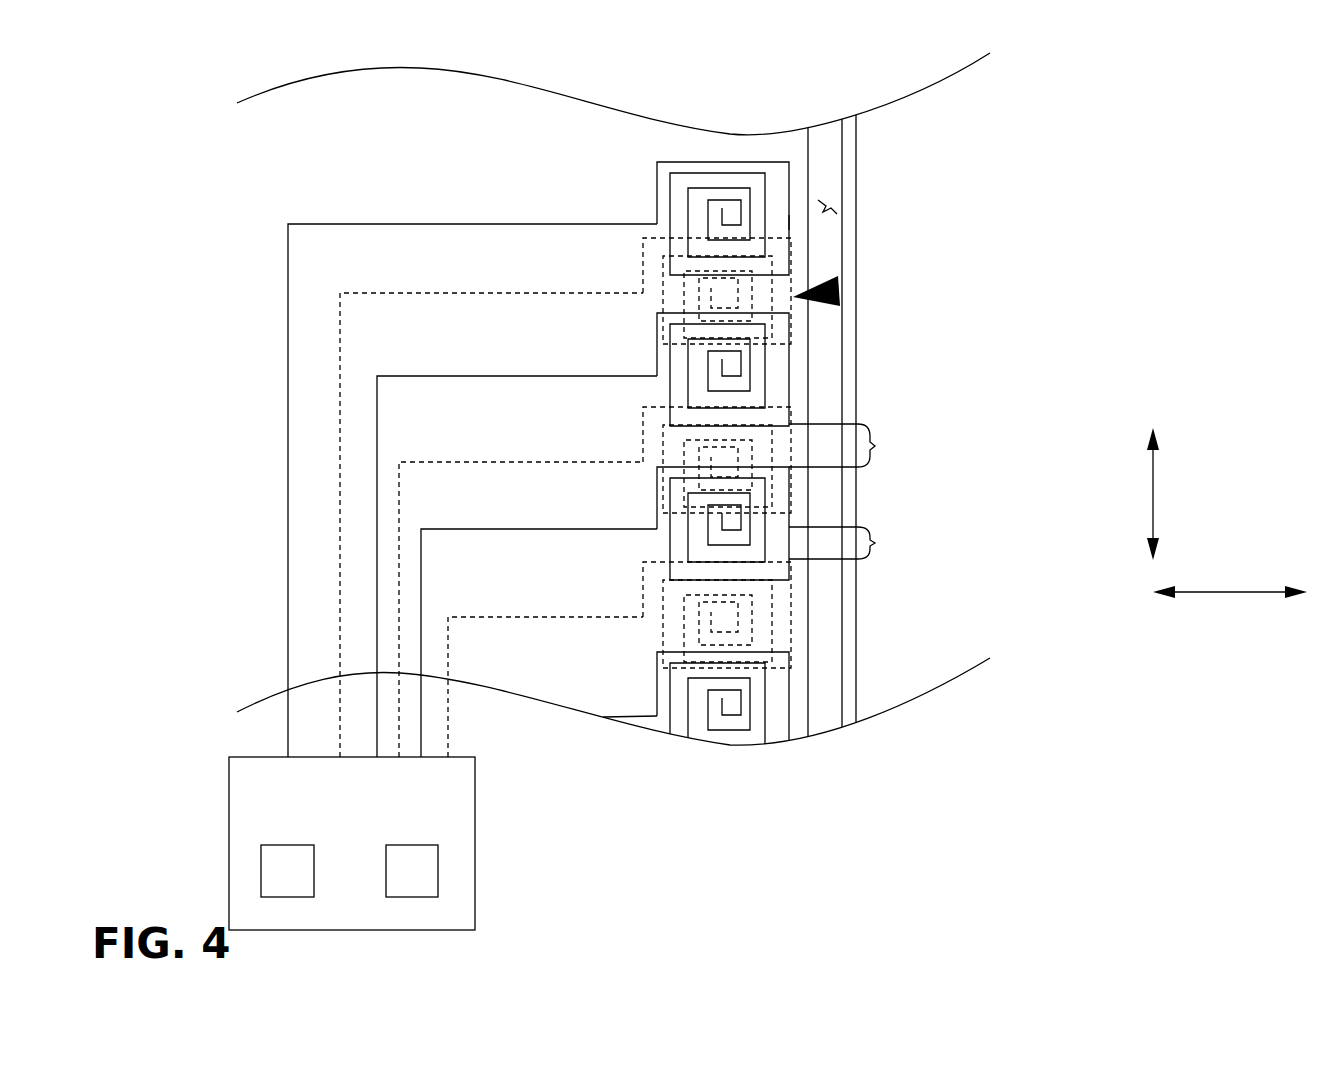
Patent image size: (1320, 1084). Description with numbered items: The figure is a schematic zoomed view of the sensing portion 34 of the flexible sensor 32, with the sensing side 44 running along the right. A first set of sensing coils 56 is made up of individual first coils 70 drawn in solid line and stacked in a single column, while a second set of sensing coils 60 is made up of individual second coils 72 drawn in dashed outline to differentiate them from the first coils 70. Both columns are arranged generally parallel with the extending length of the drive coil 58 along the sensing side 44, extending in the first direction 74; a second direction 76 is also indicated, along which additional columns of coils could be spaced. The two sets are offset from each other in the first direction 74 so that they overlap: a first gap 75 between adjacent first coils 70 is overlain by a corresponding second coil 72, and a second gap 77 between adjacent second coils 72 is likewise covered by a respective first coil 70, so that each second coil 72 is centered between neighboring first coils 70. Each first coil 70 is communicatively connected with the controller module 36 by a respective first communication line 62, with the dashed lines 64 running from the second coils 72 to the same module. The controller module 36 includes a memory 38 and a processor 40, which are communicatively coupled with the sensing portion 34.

The flexible sensor 32 is at (740, 66).
The sensing portion 34 is at (401, 429).
The controller module 36 is at (352, 843).
The memory 38 is at (278, 886).
The processor 40 is at (402, 886).
The sensing side 44 is at (884, 372).
The first set of sensing coils 56 is at (795, 222).
The drive coil 58 is at (833, 205).
The second set of sensing coils 60 is at (838, 290).
The first communication line 62 is at (377, 467).
The second conductors 64 is at (340, 597).
The first coil 70 is at (790, 195).
The second coil 72 is at (797, 630).
The first direction 74 is at (1153, 492).
The first gap 75 is at (849, 445).
The second direction 76 is at (1230, 592).
The second gap 77 is at (849, 543).